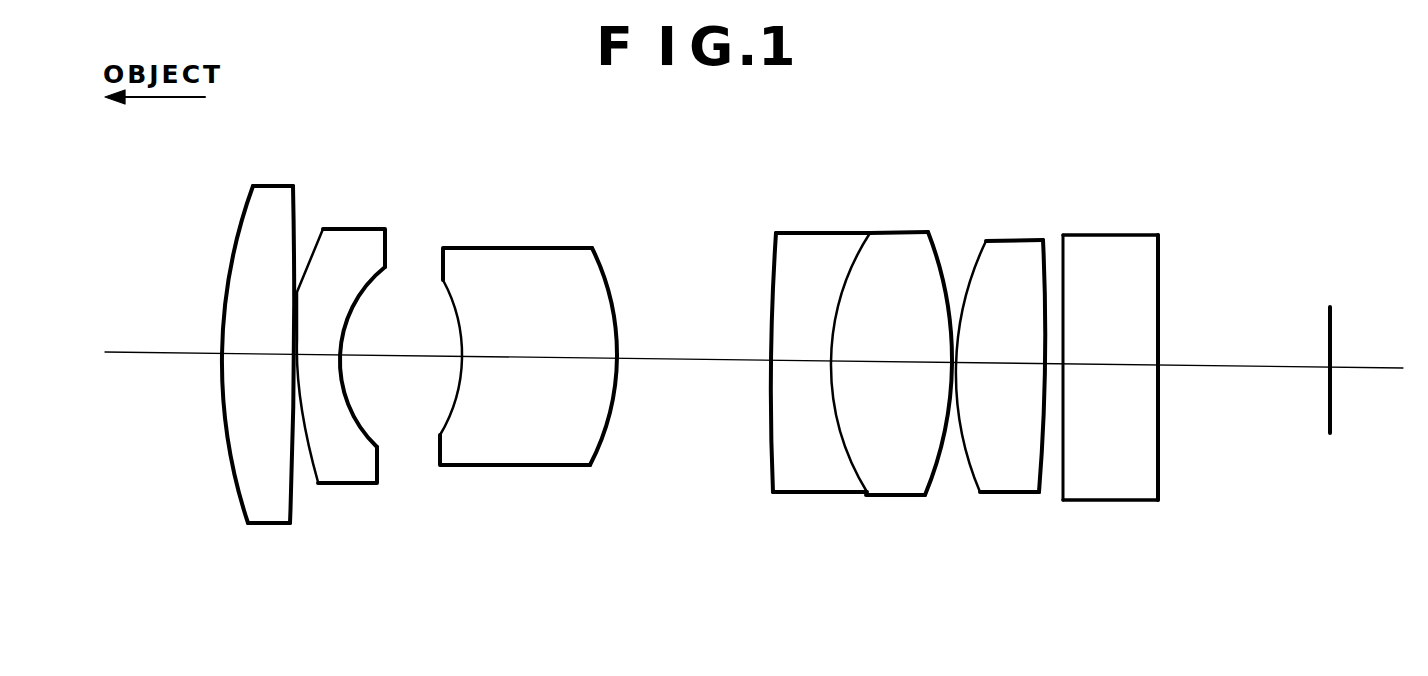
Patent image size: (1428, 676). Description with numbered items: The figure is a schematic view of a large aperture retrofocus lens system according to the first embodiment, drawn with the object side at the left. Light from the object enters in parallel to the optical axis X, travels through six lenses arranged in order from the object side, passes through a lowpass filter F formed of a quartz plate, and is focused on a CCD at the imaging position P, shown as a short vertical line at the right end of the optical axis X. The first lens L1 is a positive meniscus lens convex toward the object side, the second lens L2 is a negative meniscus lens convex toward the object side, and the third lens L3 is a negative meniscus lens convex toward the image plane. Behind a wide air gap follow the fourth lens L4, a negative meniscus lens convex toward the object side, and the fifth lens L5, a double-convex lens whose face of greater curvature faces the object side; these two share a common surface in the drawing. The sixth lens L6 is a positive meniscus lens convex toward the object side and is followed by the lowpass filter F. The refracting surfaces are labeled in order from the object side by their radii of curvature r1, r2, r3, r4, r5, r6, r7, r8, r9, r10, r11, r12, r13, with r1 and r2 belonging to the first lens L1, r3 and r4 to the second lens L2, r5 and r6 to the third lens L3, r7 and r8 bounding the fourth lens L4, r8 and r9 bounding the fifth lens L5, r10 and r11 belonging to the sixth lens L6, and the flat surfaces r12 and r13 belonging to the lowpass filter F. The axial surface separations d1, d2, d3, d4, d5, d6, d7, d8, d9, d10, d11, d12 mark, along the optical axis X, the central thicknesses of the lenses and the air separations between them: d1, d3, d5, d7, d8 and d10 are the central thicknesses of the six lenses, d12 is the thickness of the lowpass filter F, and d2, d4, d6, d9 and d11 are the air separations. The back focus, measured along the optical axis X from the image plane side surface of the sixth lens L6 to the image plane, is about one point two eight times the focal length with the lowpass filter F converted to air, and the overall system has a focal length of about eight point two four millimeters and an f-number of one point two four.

The first lens L1 is at (265, 205).
The second lens L2 is at (368, 240).
The third lens L3 is at (565, 265).
The fourth lens L4 is at (802, 255).
The fifth lens L5 is at (897, 248).
The sixth lens L6 is at (1015, 255).
The lowpass filter F is at (1140, 260).
The imaging position P is at (1333, 366).
The optical axis X is at (1245, 366).
The radius of curvature of first refracting surface r1 is at (245, 502).
The radius of curvature of second refracting surface r2 is at (297, 510).
The radius of curvature of third refracting surface r3 is at (315, 480).
The radius of curvature of fourth refracting surface r4 is at (375, 432).
The radius of curvature of fifth refracting surface r5 is at (455, 395).
The radius of curvature of sixth refracting surface r6 is at (603, 443).
The radius of curvature of seventh refracting surface r7 is at (773, 466).
The radius of curvature of eighth refracting surface r8 is at (853, 472).
The radius of curvature of ninth refracting surface r9 is at (937, 482).
The radius of curvature of tenth refracting surface r10 is at (970, 478).
The radius of curvature of eleventh refracting surface r11 is at (1045, 487).
The radius of curvature of twelfth refracting surface r12 is at (1062, 468).
The radius of curvature of thirteenth refracting surface r13 is at (1165, 474).
The first axial surface separation d1 is at (252, 352).
The second axial surface separation d2 is at (297, 340).
The third axial surface separation d3 is at (318, 354).
The fourth axial surface separation d4 is at (405, 354).
The fifth axial surface separation d5 is at (530, 357).
The sixth axial surface separation d6 is at (672, 358).
The seventh axial surface separation d7 is at (797, 360).
The eighth axial surface separation d8 is at (885, 361).
The ninth axial surface separation d9 is at (952, 360).
The tenth axial surface separation d10 is at (995, 362).
The eleventh axial surface separation d11 is at (1051, 364).
The twelfth axial surface separation d12 is at (1107, 365).